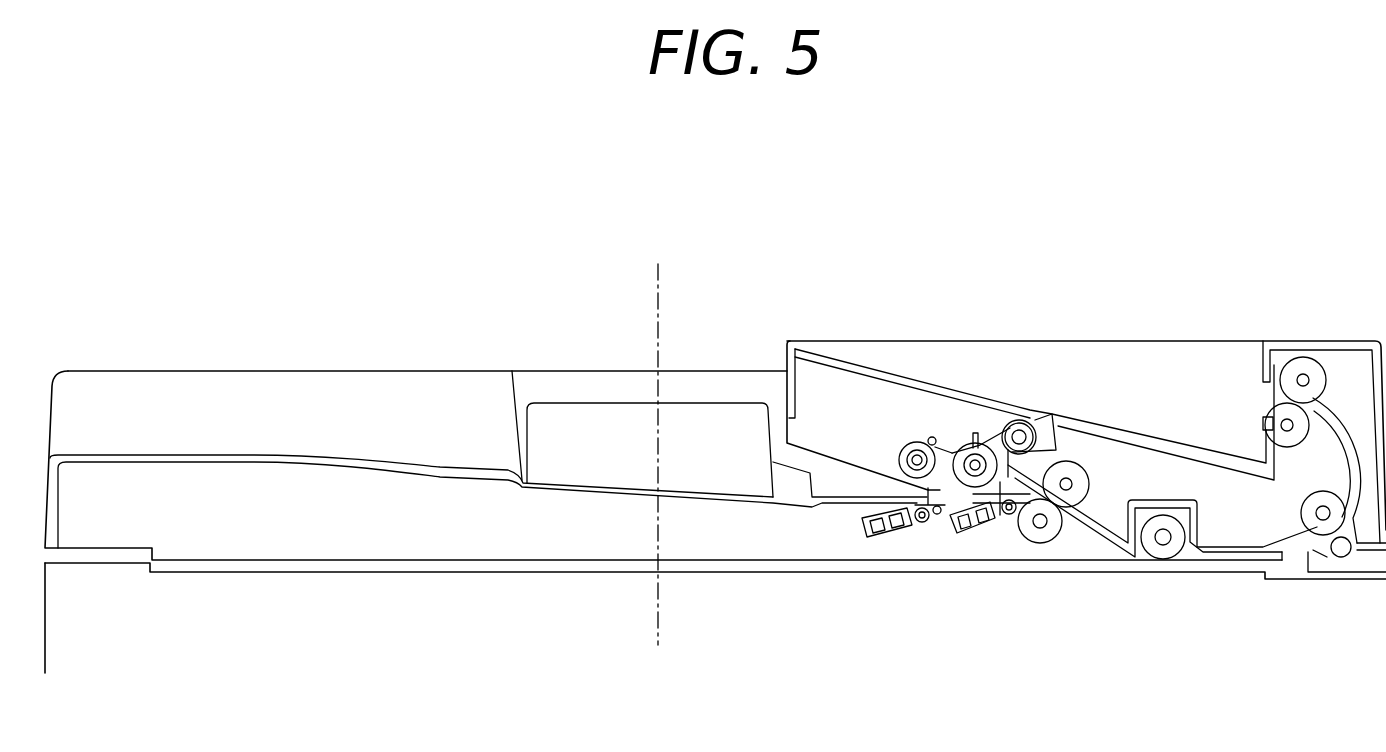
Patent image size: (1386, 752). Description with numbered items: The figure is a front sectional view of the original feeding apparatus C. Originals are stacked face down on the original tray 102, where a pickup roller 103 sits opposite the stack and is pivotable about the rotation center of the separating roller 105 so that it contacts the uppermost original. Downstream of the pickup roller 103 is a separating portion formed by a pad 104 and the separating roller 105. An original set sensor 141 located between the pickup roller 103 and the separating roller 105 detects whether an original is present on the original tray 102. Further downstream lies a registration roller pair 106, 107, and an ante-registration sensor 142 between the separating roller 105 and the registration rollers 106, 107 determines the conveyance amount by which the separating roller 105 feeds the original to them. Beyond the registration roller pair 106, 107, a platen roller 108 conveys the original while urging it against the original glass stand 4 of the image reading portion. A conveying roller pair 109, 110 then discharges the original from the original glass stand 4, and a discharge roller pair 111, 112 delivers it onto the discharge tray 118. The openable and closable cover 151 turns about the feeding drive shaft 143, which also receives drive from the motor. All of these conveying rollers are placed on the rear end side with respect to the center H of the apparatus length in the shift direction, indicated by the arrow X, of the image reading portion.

The original glass stand 4 is at (1132, 568).
The original tray 102 is at (785, 503).
The pickup roller 103 is at (908, 445).
The pad 104 is at (968, 532).
The separating roller 105 is at (963, 445).
The registration roller 106 is at (1037, 543).
The registration roller 107 is at (1070, 461).
The platen roller 108 is at (1173, 558).
The conveying roller 109 is at (1316, 540).
The conveying roller 110 is at (1354, 557).
The discharge roller 111 is at (1263, 423).
The discharge roller 112 is at (1303, 357).
The discharge tray 118 is at (1165, 440).
The original set sensor 141 is at (860, 527).
The ante-registration sensor 142 is at (947, 530).
The feeding drive shaft 143 is at (1028, 421).
The openable and closable cover 151 is at (840, 350).
The original feeding apparatus C is at (1130, 238).
The center of the length of the original feeding apparatus H is at (657, 439).
The shift direction X is at (118, 325).